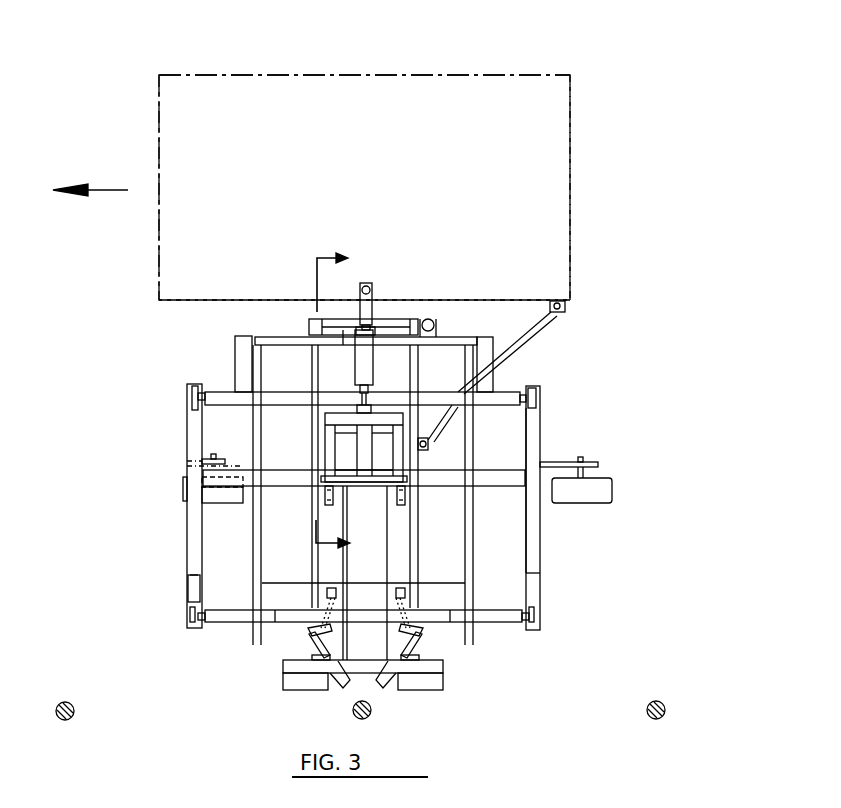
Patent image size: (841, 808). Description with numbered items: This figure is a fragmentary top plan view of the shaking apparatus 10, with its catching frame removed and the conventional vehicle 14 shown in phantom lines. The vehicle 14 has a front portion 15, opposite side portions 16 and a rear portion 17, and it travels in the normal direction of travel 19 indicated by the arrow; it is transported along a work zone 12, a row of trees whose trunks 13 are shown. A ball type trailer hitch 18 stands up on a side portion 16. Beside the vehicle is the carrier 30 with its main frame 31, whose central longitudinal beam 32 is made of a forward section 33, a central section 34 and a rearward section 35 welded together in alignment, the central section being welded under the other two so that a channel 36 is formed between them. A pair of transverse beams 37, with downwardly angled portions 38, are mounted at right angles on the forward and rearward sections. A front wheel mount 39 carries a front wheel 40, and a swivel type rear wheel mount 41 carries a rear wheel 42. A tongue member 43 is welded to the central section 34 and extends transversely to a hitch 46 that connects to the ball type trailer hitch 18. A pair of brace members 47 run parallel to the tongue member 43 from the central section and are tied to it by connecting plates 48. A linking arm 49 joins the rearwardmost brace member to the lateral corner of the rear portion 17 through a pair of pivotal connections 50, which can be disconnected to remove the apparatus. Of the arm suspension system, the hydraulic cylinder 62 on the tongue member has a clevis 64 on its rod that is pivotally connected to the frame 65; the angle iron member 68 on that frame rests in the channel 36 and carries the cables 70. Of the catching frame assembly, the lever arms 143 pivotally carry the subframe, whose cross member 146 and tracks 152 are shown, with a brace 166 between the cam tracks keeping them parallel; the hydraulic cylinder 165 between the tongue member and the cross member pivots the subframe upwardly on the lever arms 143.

The shaking apparatus 10 is at (349, 409).
The work zone 12 is at (653, 690).
The trunks 13 is at (372, 708).
The vehicle 14 is at (578, 139).
The front portion 15 is at (158, 152).
The side portions 16 is at (280, 73).
The rear portion 17 is at (572, 168).
The ball type trailer hitch 18 is at (374, 300).
The normal direction of travel 19 is at (106, 192).
The carrier 30 is at (548, 408).
The main frame 31 is at (542, 549).
The central longitudinal beam 32 is at (276, 488).
The forward section 33 is at (297, 470).
The central section 34 is at (364, 489).
The rearward section 35 is at (490, 464).
The channel 36 is at (402, 488).
The transverse beams 37 is at (186, 527).
The angled portions 38 is at (186, 593).
The front wheel mount 39 is at (218, 458).
The front wheel 40 is at (182, 489).
The rear wheel mount 41 is at (566, 458).
The rear wheel 42 is at (612, 481).
The tongue member 43 is at (372, 380).
The hitch 46 is at (370, 286).
The brace members 47 is at (311, 362).
The connecting plates 48 is at (333, 320).
The linking arm 49 is at (524, 346).
The pivotal connections 50 is at (566, 310).
The hydraulic cylinder 62 is at (365, 354).
The clevis 64 is at (355, 388).
The frame 65 is at (325, 433).
The angle iron member 68 is at (357, 483).
The cables 70 is at (326, 497).
The lever arms 143 is at (236, 357).
The cross member 146 is at (438, 338).
The tracks 152 is at (253, 549).
The hydraulic cylinder 165 is at (440, 318).
The brace 166 is at (316, 584).